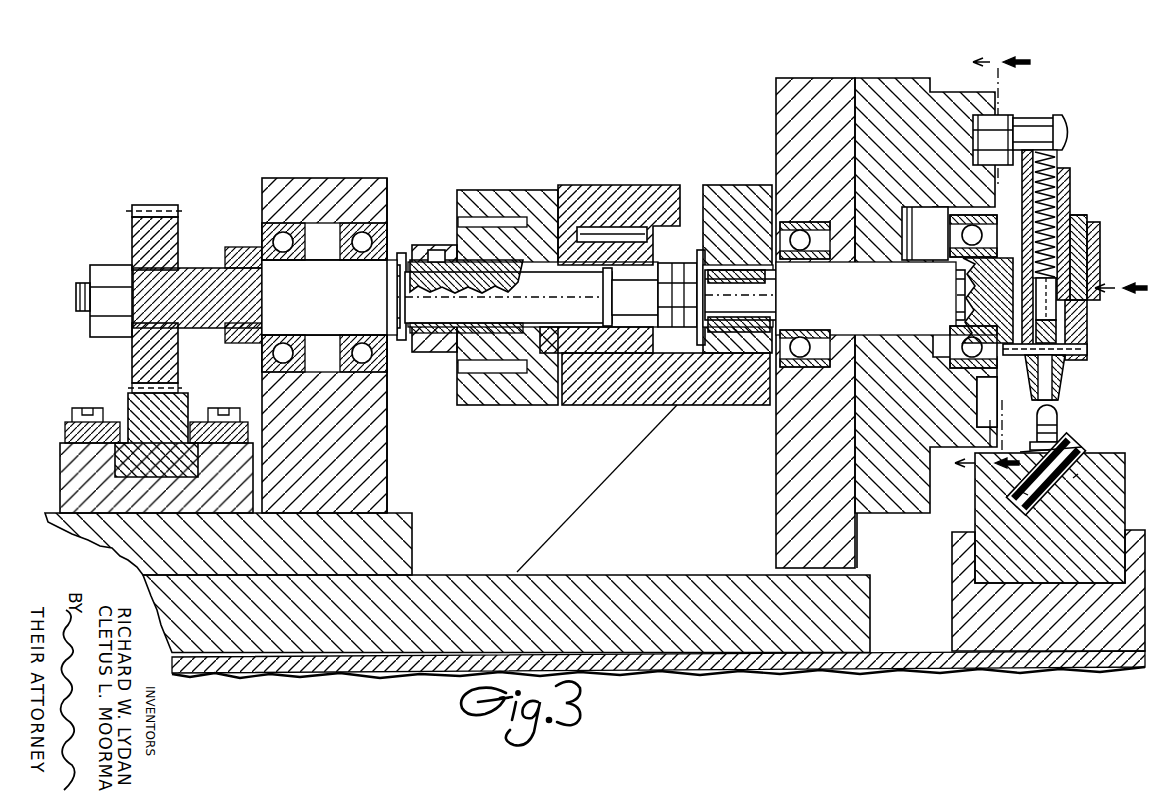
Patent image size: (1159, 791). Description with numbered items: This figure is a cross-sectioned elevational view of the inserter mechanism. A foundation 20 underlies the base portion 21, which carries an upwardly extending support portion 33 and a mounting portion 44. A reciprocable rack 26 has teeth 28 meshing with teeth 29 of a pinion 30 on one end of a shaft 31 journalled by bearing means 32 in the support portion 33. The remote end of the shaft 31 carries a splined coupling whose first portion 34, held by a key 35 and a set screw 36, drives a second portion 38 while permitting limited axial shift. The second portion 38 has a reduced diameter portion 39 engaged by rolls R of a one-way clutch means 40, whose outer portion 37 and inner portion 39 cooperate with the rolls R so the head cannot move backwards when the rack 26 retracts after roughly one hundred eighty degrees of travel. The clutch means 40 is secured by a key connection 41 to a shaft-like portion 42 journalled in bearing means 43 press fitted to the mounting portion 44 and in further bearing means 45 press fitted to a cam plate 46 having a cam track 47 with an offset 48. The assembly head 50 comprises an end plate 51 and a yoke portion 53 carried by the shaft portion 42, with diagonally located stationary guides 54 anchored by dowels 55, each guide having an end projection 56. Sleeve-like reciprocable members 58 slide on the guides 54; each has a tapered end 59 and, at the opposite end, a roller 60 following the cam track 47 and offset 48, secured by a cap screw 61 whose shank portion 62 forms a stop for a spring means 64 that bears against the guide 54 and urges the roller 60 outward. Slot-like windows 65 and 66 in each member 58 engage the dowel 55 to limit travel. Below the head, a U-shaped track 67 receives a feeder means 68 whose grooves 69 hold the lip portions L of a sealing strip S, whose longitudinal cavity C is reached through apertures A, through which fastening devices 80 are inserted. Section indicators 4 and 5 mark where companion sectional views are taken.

The base slab 20 is at (312, 668).
The base portion 21 is at (147, 563).
The reciprocable rack 26 is at (120, 417).
The teeth or projections 28 is at (127, 400).
The external projections or teeth 29 is at (163, 205).
The gear or pinion 30 is at (178, 234).
The shaft 31 is at (203, 328).
The bearing means 32 is at (290, 246).
The upwardly extending support portion 33 is at (347, 178).
The first portion of splined coupling 34 is at (440, 352).
The key 35 is at (480, 273).
The set screw 36 is at (435, 248).
The outer portion of one-way clutch 37 is at (573, 227).
The second portion of splined coupling 38 is at (507, 190).
The reduced diameter portion 39 is at (641, 251).
The one-way clutch means 40 is at (744, 195).
The key connection 41 is at (733, 270).
The shaft-like portion 42 is at (890, 300).
The bearing means 43 is at (799, 338).
The mounting portion 44 is at (776, 103).
The further bearing means 45 is at (962, 239).
The cam plate 46 is at (908, 222).
The cam track 47 is at (987, 411).
The offset 48 is at (980, 114).
The assembly head 50 is at (1088, 216).
The end plate or cover portion 51 is at (1088, 232).
The yoke or transverse portion 53 is at (1027, 381).
The rods or stationary guides 54 is at (1062, 333).
The transverse pins or dowels 55 is at (1087, 350).
The end projection 56 is at (1049, 398).
The sleeve-like diagonally reciprocable members 58 is at (1068, 187).
The tapered end 59 is at (1060, 391).
The roller means 60 is at (985, 139).
The cap screws 61 is at (1070, 122).
The shank portion 62 is at (1047, 135).
The spring means 64 is at (1035, 244).
The lateral cutout or slot-like window 65 is at (1016, 308).
The lateral cutout or slot-like window 66 is at (1058, 310).
The U-shaped track 67 is at (955, 617).
The feeder means 68 is at (983, 556).
The cavity or channel-like grooves 69 is at (1072, 476).
The plastic fastening devices 80 is at (1040, 434).
The section line 4- 4 is at (983, 274).
The section line 5- 5 is at (1121, 274).
The rolls or rollers R is at (623, 228).
The openings or apertures A is at (1000, 428).
The longitudinally extending cavity C is at (1080, 448).
The lip portions L is at (1074, 478).
The sealing strip S is at (1023, 490).